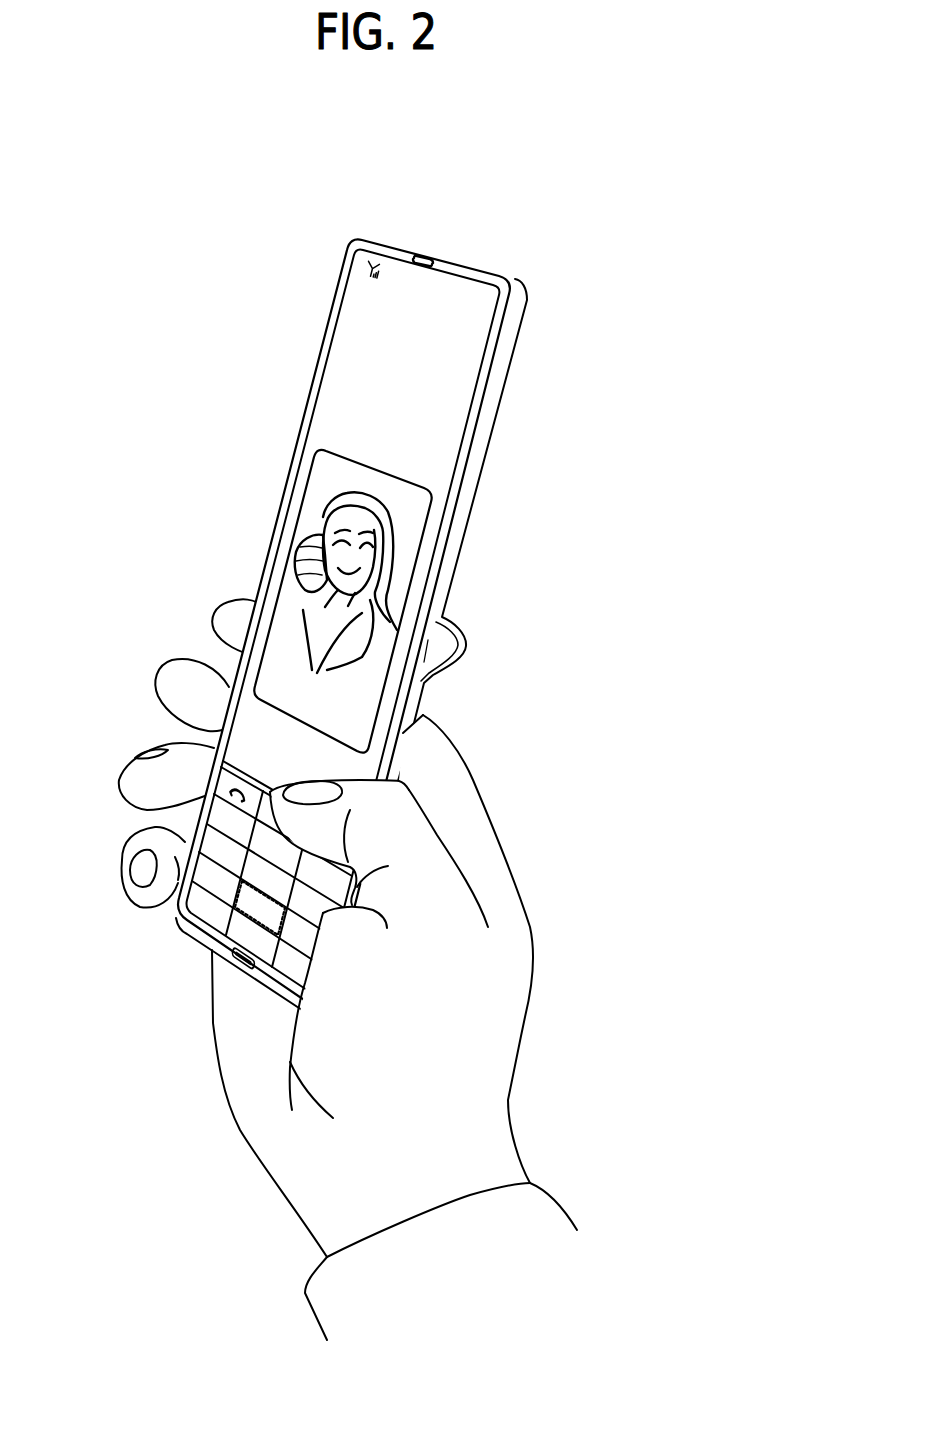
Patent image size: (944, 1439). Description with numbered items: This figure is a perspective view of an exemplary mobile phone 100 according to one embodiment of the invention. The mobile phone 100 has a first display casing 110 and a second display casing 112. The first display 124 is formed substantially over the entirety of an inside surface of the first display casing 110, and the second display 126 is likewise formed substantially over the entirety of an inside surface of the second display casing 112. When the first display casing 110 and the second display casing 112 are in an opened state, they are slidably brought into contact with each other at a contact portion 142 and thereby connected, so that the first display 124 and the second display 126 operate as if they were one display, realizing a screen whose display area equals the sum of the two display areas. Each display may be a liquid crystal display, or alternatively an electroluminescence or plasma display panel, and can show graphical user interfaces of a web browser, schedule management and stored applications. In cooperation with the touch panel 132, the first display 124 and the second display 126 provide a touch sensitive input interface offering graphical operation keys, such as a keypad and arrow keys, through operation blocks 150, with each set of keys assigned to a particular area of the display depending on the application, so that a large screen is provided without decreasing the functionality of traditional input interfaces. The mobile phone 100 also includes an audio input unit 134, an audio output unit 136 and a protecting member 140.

The mobile phone 100 is at (434, 204).
The first display casing 110 is at (518, 288).
The second display casing 112 is at (423, 717).
The first display 124 is at (372, 456).
The second display 126 is at (240, 705).
The touch panel 132 is at (198, 800).
The audio input unit 134 is at (238, 955).
The audio output unit 136 is at (423, 253).
The protecting member 140 is at (468, 642).
The contact portion 142 is at (430, 647).
The operation blocks 150 is at (236, 905).